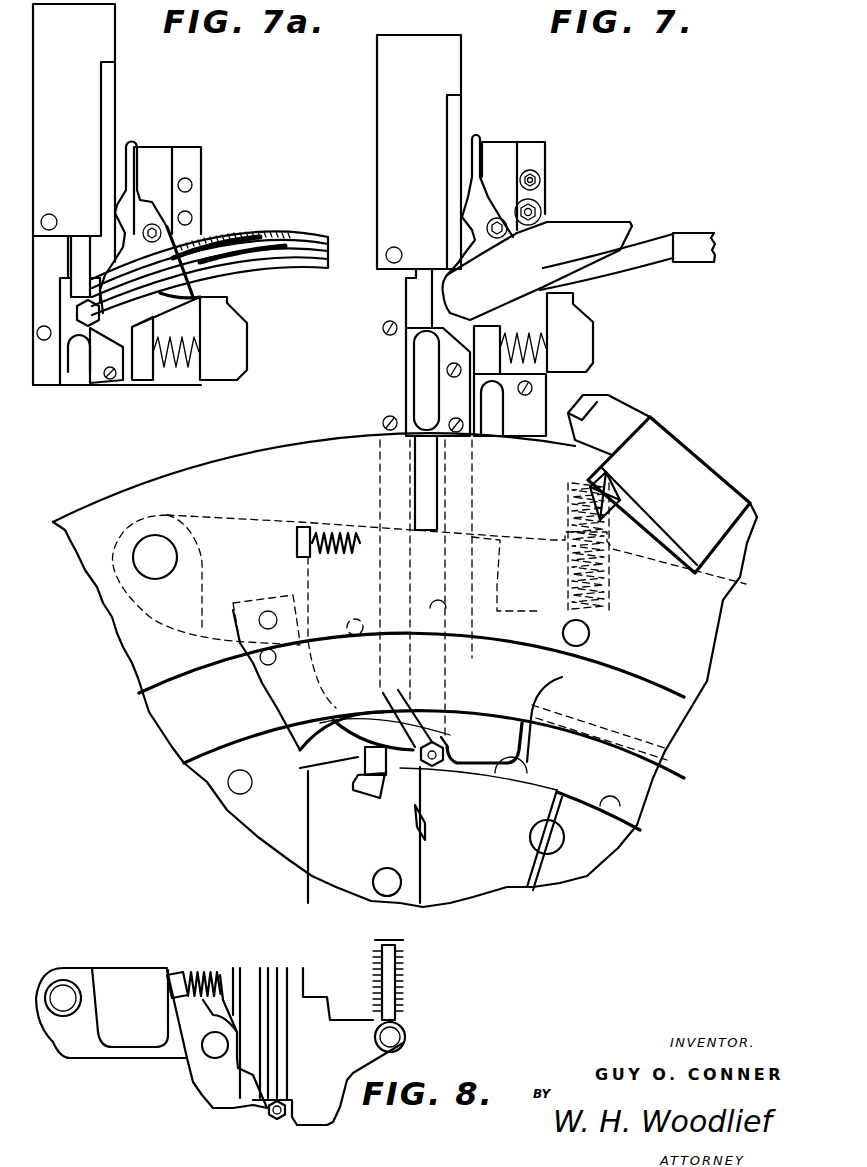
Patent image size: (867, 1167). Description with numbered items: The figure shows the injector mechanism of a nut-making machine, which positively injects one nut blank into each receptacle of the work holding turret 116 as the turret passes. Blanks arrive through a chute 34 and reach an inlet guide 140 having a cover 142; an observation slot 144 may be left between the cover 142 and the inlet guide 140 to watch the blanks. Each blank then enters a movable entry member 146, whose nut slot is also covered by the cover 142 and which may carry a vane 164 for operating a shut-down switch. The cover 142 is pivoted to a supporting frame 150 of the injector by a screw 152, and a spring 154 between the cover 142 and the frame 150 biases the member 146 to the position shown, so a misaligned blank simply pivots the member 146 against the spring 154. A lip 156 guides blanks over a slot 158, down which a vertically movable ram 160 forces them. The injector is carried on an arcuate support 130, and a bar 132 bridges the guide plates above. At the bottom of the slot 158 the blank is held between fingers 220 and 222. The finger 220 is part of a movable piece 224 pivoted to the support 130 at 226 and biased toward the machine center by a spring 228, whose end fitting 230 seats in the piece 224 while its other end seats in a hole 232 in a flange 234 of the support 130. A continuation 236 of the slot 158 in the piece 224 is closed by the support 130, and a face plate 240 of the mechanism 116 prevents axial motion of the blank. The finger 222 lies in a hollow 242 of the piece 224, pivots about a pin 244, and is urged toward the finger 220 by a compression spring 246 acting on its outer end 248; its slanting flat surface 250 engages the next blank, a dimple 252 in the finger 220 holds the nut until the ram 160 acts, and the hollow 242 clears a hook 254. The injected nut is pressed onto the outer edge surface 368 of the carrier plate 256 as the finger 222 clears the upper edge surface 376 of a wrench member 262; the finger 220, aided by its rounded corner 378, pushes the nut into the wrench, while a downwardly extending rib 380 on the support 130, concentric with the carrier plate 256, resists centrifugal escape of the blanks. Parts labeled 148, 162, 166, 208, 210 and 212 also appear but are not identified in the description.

In FIG. 7, the chute 34 is at (694, 258).
In FIG. 7, the work holding turret 116 is at (636, 853).
In FIG. 7, the arcuate support 130 is at (715, 576).
In FIG. 7, the bar 132 is at (652, 440).
In FIG. 7A, the inlet guide 140 is at (311, 262).
In FIG. 7, the inlet guide 140 is at (644, 245).
In FIG. 7, the cover 142 is at (576, 236).
In FIG. 7, the observation slot 144 is at (578, 244).
In FIG. 7A, the movable entry member 146 is at (135, 216).
In FIG. 7, the movable entry member 146 is at (485, 198).
In FIG. 7A, the guide finger 148 is at (205, 301).
In FIG. 7A, the supporting frame 150 is at (157, 181).
In FIG. 7, the supporting frame 150 is at (548, 398).
In FIG. 7A, the screw 152 is at (161, 233).
In FIG. 7, the screw 152 is at (489, 227).
In FIG. 7A, the spring 154 is at (190, 368).
In FIG. 7, the spring 154 is at (562, 326).
In FIG. 7A, the lip 156 is at (90, 386).
In FIG. 7, the lip 156 is at (437, 308).
In FIG. 7A, the slot 158 is at (64, 386).
In FIG. 7, the slot 158 is at (445, 403).
In FIG. 7A, the ram 160 is at (79, 253).
In FIG. 7, the ram 160 is at (421, 299).
In FIG. 7A, the head 162 is at (66, 298).
In FIG. 7A, the vane 164 is at (134, 152).
In FIG. 7, the vane 164 is at (477, 138).
In FIG. 7A, the bar 166 is at (81, 84).
In FIG. 7, the bar 166 is at (406, 126).
In FIG. 7A, the screws 208 is at (110, 381).
In FIG. 7, the screws 208 is at (384, 331).
In FIG. 7, the slide bar 210 is at (416, 463).
In FIG. 7A, the slot 212 is at (76, 390).
In FIG. 7, the slot 212 is at (425, 357).
In FIG. 7, the finger 220 is at (506, 752).
In FIG. 8, the finger 220 is at (317, 1117).
In FIG. 7, the finger 222 is at (403, 713).
In FIG. 8, the finger 222 is at (233, 1110).
In FIG. 7, the movable piece 224 is at (257, 518).
In FIG. 7, the pivot 226 is at (160, 548).
In FIG. 7, the spring 228 is at (612, 586).
In FIG. 8, the spring 228 is at (403, 981).
In FIG. 7, the end fitting 230 is at (590, 633).
In FIG. 8, the end fitting 230 is at (394, 1036).
In FIG. 7, the hole 232 is at (608, 532).
In FIG. 7, the flange 234 is at (542, 530).
In FIG. 7, the continuation of the slot 236 is at (446, 610).
In FIG. 8, the continuation of the slot 236 is at (277, 1037).
In FIG. 7, the face plate 240 is at (643, 819).
In FIG. 7, the hollow 242 is at (300, 597).
In FIG. 8, the hollow 242 is at (108, 1045).
In FIG. 7, the pin 244 is at (352, 623).
In FIG. 8, the pin 244 is at (213, 1047).
In FIG. 7, the compression spring 246 is at (347, 530).
In FIG. 8, the compression spring 246 is at (207, 977).
In FIG. 7, the outer end 248 is at (305, 527).
In FIG. 8, the outer end 248 is at (180, 977).
In FIG. 7, the flat surface 250 is at (407, 717).
In FIG. 8, the flat surface 250 is at (267, 1108).
In FIG. 7, the dimple 252 is at (443, 740).
In FIG. 8, the dimple 252 is at (284, 1108).
In FIG. 7, the hook 254 is at (300, 750).
In FIG. 7, the carrier plate 256 is at (487, 867).
In FIG. 7, the wrench member 262 is at (338, 848).
In FIG. 7, the outer edge surface 368 is at (497, 774).
In FIG. 7, the upper edge surface 376 is at (337, 755).
In FIG. 7, the rounded corner 378 is at (447, 766).
In FIG. 7, the rib 380 is at (556, 755).